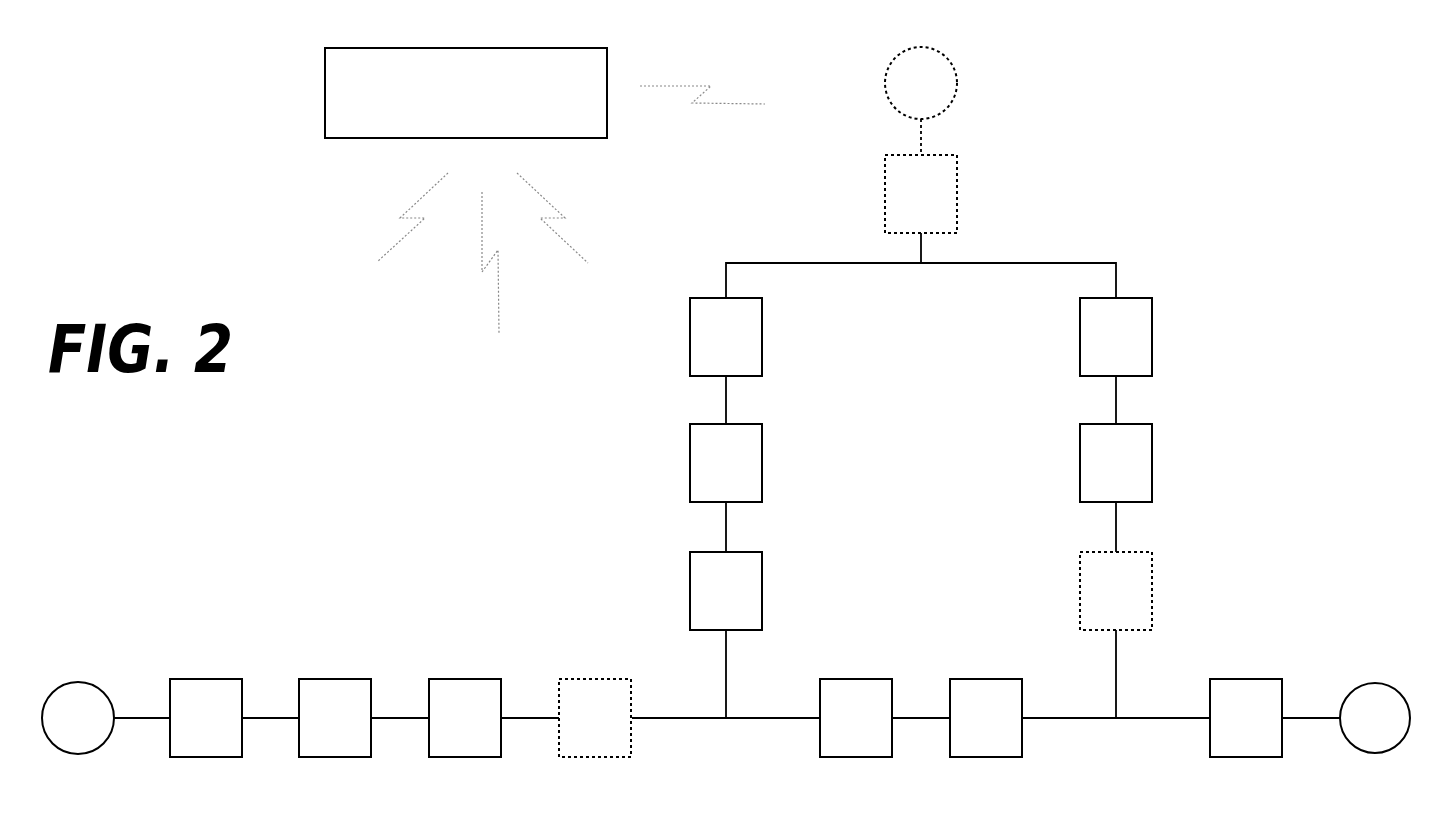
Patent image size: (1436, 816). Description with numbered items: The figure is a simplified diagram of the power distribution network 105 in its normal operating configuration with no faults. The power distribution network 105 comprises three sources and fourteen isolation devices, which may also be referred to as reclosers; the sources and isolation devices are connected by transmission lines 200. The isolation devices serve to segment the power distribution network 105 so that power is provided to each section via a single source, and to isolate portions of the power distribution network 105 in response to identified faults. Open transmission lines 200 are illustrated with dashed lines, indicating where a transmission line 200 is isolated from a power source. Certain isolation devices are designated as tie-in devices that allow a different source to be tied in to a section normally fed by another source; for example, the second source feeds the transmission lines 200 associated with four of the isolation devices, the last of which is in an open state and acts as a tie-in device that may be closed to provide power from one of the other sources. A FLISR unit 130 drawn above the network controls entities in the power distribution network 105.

The power distribution network 105 is at (217, 104).
The FLISR unit 130 is at (466, 93).
The transmission lines 200 is at (1010, 263).